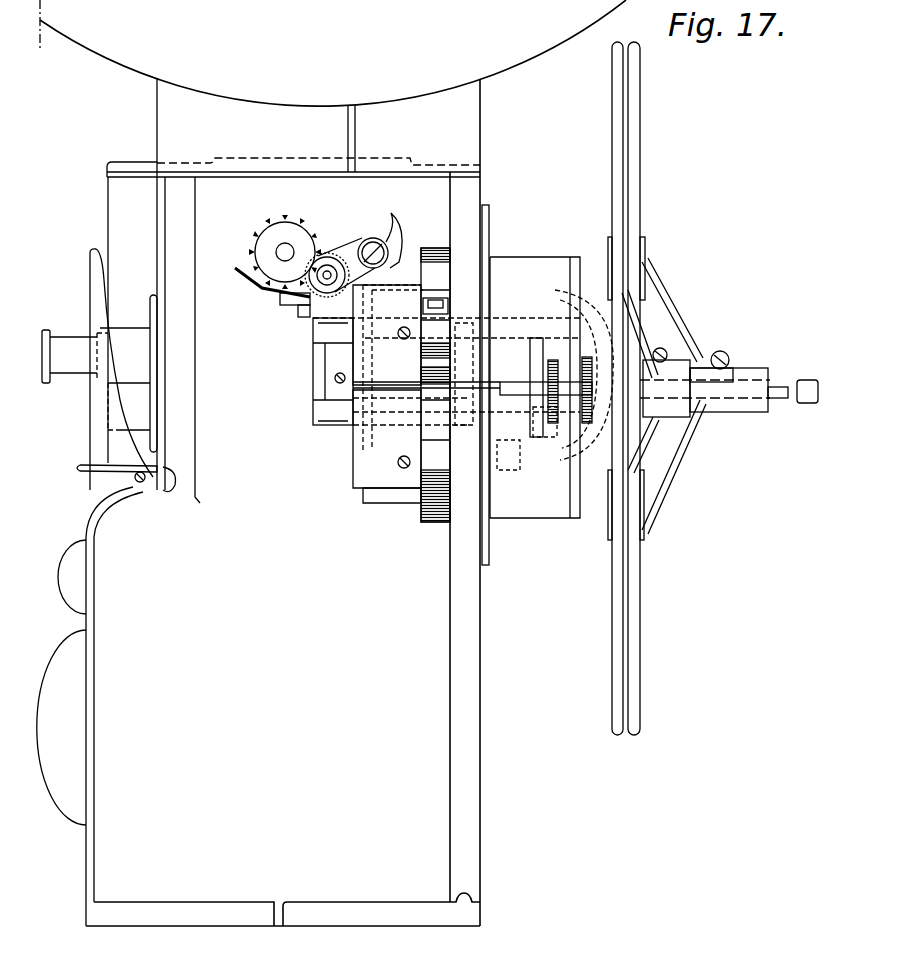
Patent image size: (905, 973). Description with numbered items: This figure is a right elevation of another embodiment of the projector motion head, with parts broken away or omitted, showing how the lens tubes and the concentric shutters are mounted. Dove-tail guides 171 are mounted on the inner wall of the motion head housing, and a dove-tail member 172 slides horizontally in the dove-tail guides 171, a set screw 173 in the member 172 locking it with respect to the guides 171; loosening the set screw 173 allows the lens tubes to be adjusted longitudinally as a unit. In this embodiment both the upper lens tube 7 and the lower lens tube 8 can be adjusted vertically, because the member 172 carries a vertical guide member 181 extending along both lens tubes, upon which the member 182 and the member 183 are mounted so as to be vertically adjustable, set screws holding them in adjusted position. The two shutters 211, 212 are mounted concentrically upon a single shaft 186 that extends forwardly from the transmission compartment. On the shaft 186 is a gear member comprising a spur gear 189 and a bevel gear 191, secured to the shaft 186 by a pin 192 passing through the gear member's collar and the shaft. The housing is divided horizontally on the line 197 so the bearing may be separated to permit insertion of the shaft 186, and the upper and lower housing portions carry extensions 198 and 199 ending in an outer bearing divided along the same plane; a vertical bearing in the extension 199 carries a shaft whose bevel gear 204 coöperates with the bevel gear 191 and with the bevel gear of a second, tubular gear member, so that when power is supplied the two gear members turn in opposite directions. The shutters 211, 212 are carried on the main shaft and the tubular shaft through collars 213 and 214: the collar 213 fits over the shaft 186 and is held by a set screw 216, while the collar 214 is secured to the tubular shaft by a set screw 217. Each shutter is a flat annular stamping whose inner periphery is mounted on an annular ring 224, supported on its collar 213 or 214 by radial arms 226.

The lens tube 7 is at (543, 263).
The lower lens tube 8 is at (530, 510).
The dove-tail guides 171 is at (325, 325).
The dove-tail member 172 is at (335, 362).
The set screw 173 is at (336, 380).
The vertical guide member 181 is at (383, 497).
The member 182 is at (358, 375).
The member 183 is at (358, 460).
The shaft 186 is at (778, 392).
The spur gear 189 is at (546, 358).
The bevel gear 191 is at (519, 384).
The pin 192 is at (613, 343).
The dividing line 197 is at (530, 388).
The extension 198 is at (530, 323).
The extension 199 is at (497, 453).
The bevel gear 204 is at (537, 413).
The shutter 211 is at (640, 64).
The shutter 212 is at (612, 62).
The collar 213 is at (733, 368).
The collar 214 is at (672, 358).
The set screw 216 is at (716, 355).
The set screw 217 is at (648, 345).
The annular ring 224 is at (645, 250).
The radial arms 226 is at (668, 303).